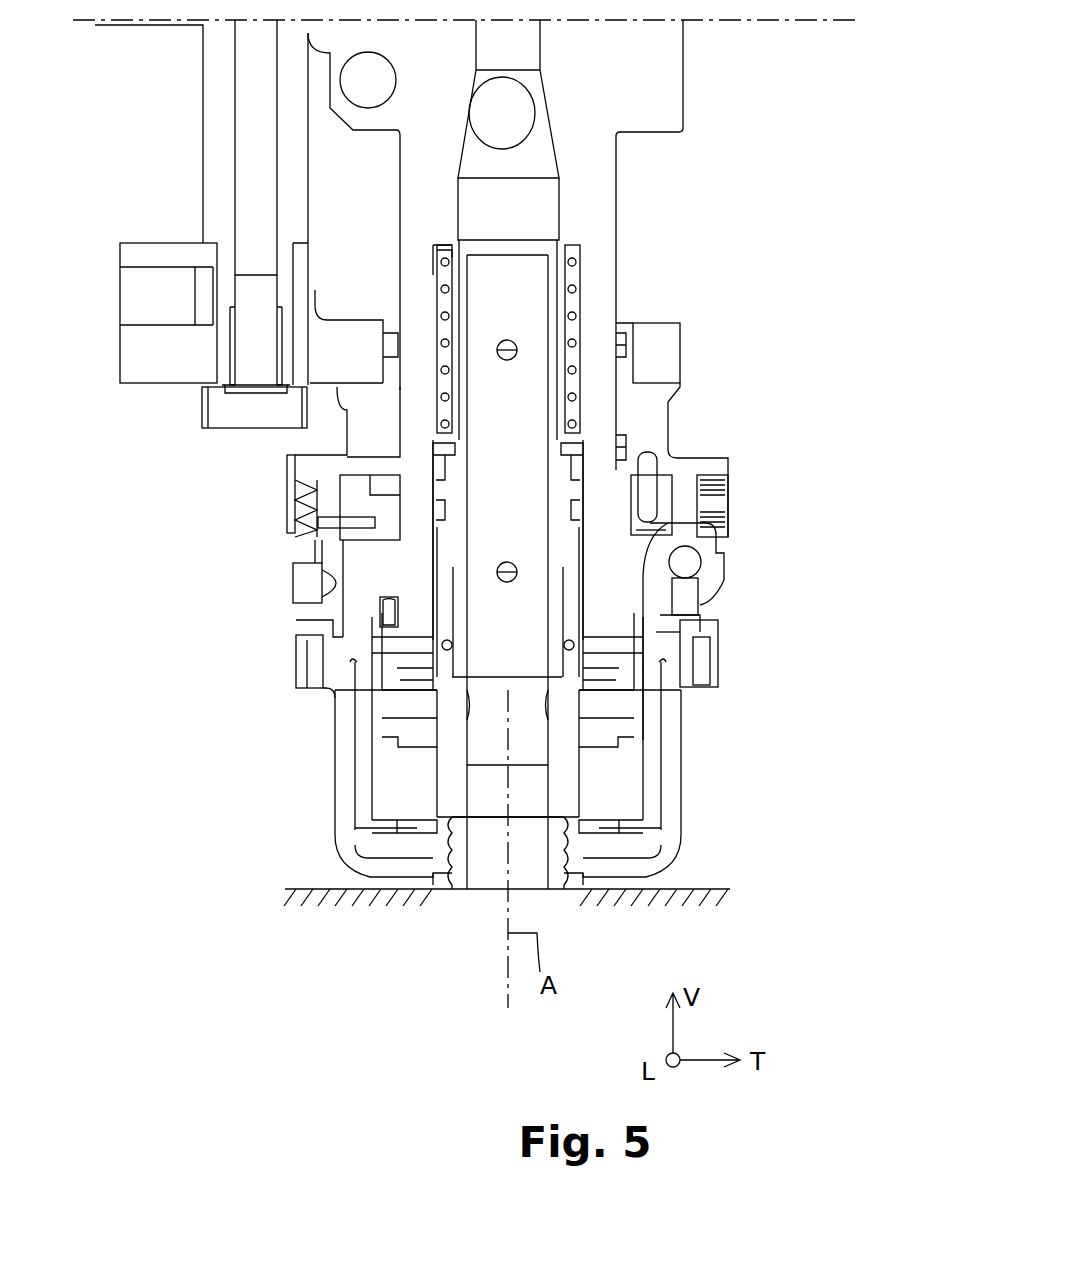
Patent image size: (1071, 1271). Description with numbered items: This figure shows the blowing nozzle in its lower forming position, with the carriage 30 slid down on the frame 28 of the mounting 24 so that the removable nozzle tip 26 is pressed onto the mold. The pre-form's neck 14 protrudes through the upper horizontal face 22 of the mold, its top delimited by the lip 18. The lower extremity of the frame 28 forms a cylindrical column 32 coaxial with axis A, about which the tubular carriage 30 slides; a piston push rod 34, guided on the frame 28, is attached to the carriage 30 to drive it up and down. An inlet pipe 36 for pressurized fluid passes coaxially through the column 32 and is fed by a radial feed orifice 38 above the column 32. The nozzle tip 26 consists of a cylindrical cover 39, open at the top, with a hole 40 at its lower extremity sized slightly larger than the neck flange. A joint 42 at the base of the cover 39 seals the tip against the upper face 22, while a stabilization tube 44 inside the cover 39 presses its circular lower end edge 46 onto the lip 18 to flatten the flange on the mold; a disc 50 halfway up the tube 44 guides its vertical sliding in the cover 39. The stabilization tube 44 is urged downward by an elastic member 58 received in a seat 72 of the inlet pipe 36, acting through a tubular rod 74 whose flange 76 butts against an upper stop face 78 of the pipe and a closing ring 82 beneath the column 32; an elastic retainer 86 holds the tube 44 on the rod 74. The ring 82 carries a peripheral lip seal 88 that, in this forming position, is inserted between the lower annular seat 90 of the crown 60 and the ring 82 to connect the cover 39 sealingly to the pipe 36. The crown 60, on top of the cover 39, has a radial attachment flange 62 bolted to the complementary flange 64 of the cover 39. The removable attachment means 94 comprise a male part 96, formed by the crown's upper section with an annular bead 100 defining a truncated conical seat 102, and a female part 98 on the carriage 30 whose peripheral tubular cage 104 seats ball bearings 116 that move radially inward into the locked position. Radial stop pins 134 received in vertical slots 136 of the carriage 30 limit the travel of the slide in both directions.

The neck 14 is at (483, 862).
The lip 18 is at (535, 812).
The upper horizontal face 22 is at (698, 887).
The mounting 24 is at (665, 178).
The removable nozzle tip 26 is at (725, 737).
The frame 28 is at (668, 105).
The carriage 30 is at (650, 427).
The cylindrical column 32 is at (418, 403).
The push rod 34 is at (265, 205).
The inlet pipe 36 is at (475, 205).
The feed orifice 38 is at (515, 110).
The cylindrical cover 39 is at (668, 762).
The hole 40 is at (437, 872).
The joint 42 is at (408, 873).
The stabilization tube 44 is at (452, 783).
The circular lower end edge 46 is at (585, 838).
The disc 50 is at (418, 737).
The elastic member 58 is at (578, 265).
The crown 60 is at (658, 632).
The radial attachment flange 62 is at (715, 652).
The complementary flange 64 is at (716, 680).
The seat 72 is at (437, 298).
The tubular rod 74 is at (552, 350).
The flange 76 is at (405, 440).
The upper stop face 78 is at (437, 262).
The closing ring 82 is at (365, 520).
The elastic retainer 86 is at (455, 645).
The peripheral lip seal 88 is at (440, 582).
The lower annular seat 90 is at (383, 615).
The removable attachment means 94 is at (730, 585).
The male part 96 is at (685, 540).
The female part 98 is at (688, 593).
The annular bead 100 is at (305, 542).
The truncated conical seat 102 is at (342, 578).
The peripheral tubular cage 104 is at (688, 540).
The ball bearings 116 is at (690, 564).
The radial stop pins 134 is at (372, 550).
The vertical slots 136 is at (300, 562).